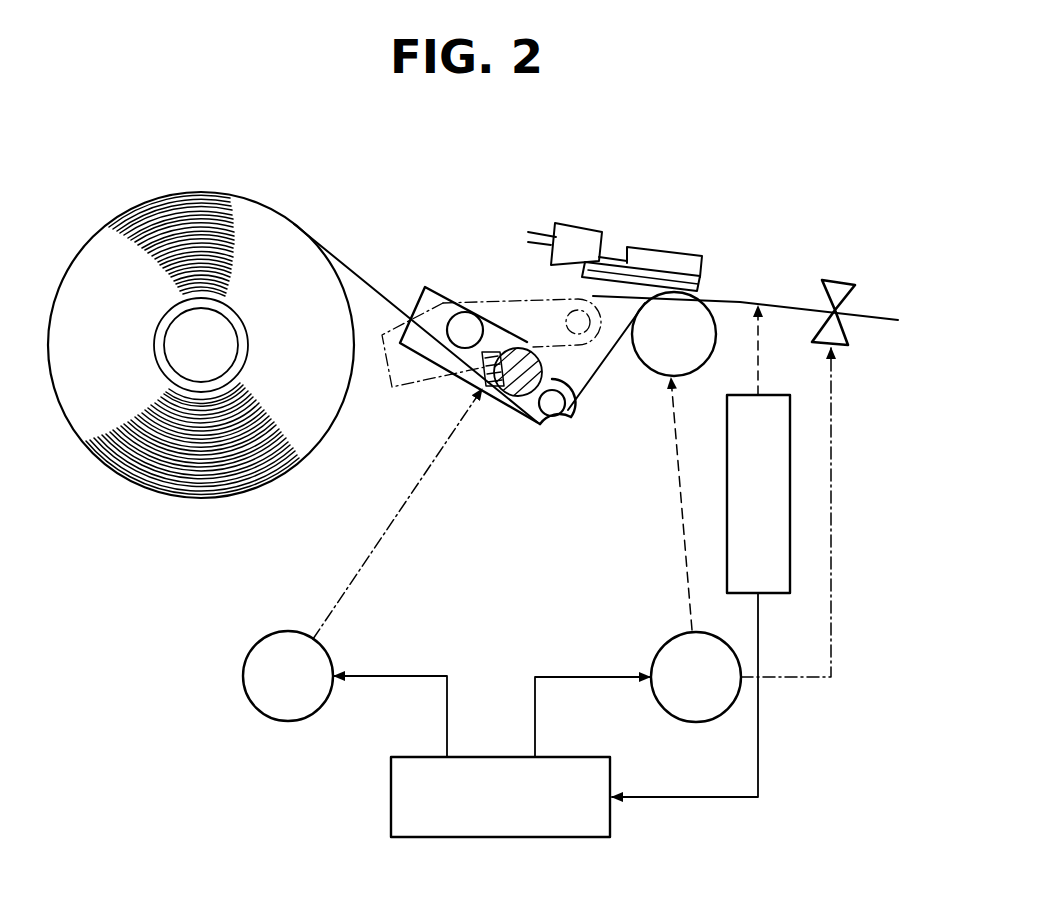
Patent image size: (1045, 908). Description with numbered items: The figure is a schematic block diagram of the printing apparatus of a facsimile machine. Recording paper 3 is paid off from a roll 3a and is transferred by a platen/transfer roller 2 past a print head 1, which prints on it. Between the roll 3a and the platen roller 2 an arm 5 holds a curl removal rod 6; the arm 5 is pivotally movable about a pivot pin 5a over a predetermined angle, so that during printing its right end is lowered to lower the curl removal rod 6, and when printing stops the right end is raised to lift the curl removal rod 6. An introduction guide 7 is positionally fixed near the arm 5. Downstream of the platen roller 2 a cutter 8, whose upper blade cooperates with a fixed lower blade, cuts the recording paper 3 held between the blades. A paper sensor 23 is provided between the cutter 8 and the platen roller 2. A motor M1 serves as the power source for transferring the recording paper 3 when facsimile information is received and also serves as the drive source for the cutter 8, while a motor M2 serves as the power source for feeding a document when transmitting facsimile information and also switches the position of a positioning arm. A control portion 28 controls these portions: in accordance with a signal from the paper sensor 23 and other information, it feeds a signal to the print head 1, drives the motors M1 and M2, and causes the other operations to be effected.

The print head 1 is at (657, 252).
The platen/transfer roller 2 is at (659, 366).
The recording paper 3 is at (890, 321).
The roll of recording paper 3a is at (242, 218).
The arm 5 is at (452, 361).
The pivot pin 5a is at (466, 314).
The curl removal rod 6 is at (548, 410).
The introduction guide 7 is at (518, 398).
The cutter 8 is at (838, 279).
The paper sensor 23 is at (790, 572).
The control portion 28 is at (498, 838).
The motor M1 is at (653, 648).
The motor M2 is at (262, 715).